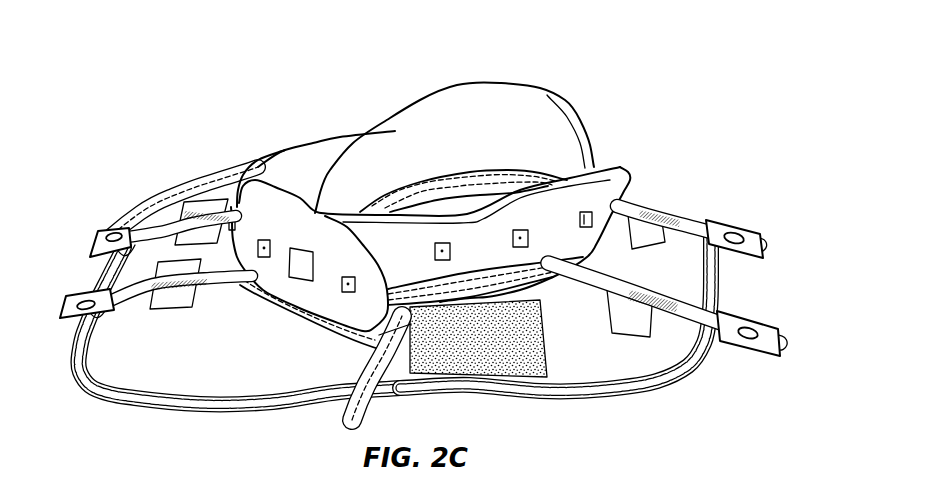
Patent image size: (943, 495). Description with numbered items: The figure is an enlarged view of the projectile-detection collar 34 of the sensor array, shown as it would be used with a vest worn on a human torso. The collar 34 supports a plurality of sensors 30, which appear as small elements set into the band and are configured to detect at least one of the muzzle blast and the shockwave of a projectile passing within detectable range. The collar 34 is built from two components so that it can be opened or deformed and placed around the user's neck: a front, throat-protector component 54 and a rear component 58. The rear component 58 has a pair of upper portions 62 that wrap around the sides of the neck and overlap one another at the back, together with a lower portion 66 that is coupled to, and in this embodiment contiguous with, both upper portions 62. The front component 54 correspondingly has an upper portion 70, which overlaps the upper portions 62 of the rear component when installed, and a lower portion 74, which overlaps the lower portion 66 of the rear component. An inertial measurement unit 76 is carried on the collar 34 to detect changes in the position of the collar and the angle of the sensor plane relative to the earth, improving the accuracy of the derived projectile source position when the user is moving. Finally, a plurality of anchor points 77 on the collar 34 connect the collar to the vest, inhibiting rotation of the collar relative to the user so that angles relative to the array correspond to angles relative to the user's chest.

The sensors 30 is at (593, 216).
The collar 34 is at (592, 113).
The front, throat-protector component 54 is at (145, 277).
The rear component 58 is at (699, 290).
The upper portions 62 is at (473, 97).
The lower portion 66 is at (697, 382).
The upper portion 70 is at (310, 147).
The lower portion 74 is at (147, 368).
The inertial measurement unit 76 is at (298, 265).
The anchor points 77 is at (780, 338).